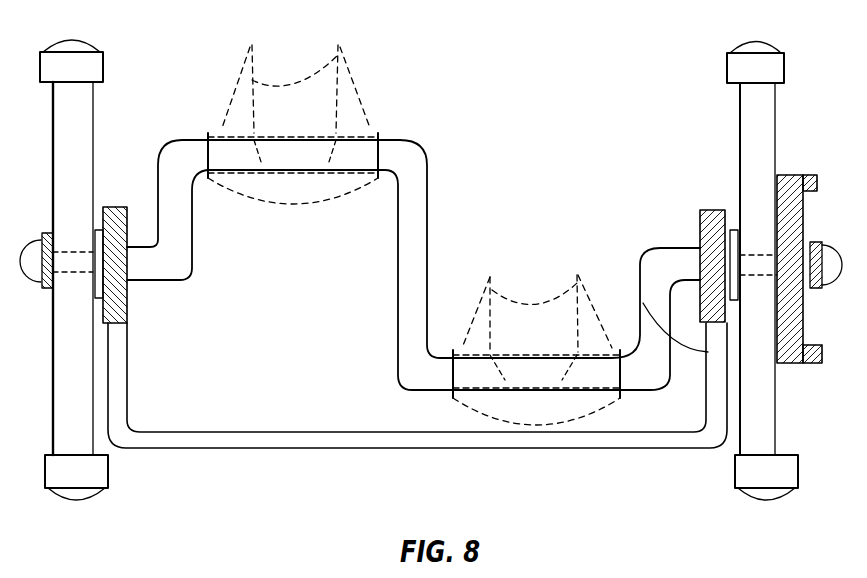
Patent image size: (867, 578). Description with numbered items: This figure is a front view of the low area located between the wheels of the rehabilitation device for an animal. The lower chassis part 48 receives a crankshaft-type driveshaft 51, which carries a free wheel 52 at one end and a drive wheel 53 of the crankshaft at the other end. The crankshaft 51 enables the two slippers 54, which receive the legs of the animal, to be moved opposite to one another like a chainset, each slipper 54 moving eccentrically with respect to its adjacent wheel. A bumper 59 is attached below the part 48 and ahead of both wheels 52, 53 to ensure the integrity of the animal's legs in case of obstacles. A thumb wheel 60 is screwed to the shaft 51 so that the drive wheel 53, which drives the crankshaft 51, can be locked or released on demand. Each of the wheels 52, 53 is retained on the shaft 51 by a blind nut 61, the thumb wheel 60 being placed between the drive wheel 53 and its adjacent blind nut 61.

The part of the lower chassis 48 is at (700, 228).
The crankshaft-type driveshaft 51 is at (620, 357).
The free wheel 52 is at (67, 180).
The drive wheel 53 is at (757, 185).
The slipper 54 is at (233, 117).
The bumper 59 is at (648, 375).
The thumb wheel 60 is at (787, 187).
The blind nut 61 is at (96, 252).